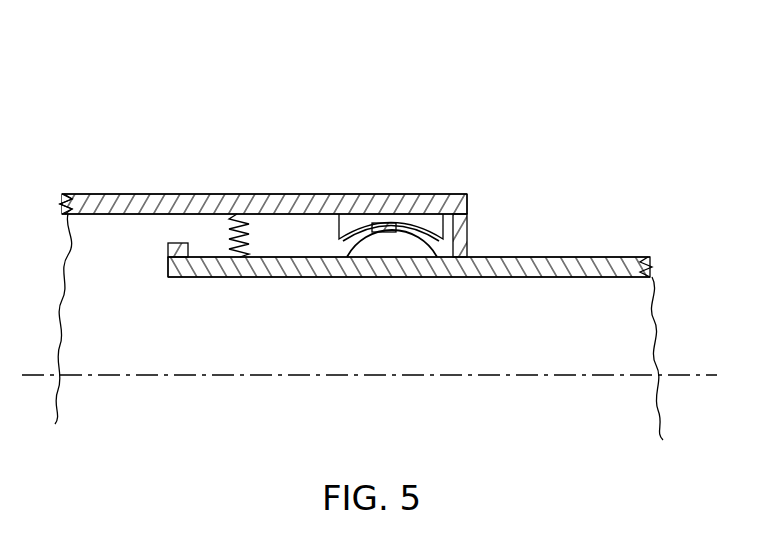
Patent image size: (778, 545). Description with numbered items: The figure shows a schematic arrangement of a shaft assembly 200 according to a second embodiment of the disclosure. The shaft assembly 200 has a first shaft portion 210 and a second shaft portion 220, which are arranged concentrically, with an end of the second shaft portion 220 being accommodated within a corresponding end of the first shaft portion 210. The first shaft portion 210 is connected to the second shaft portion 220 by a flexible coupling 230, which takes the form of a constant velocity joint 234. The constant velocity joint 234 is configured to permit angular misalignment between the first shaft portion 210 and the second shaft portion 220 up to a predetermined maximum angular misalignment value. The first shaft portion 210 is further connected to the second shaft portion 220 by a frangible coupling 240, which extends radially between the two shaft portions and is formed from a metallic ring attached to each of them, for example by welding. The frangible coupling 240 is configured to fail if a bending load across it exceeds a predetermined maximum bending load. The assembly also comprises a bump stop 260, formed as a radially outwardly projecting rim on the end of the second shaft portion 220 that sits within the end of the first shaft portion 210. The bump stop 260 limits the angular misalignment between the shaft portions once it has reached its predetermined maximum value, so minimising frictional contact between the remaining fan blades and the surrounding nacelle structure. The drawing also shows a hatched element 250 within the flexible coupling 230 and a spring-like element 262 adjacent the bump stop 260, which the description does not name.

The shaft assembly 200 is at (224, 92).
The first shaft portion 210 is at (122, 193).
The second shaft portion 220 is at (600, 257).
The flexible coupling 230 is at (355, 232).
The constant velocity joint 234 is at (418, 236).
The frangible coupling 240 is at (470, 230).
The sensing element 250 is at (386, 224).
The bump stop 260 is at (184, 243).
The spring 262 is at (255, 213).